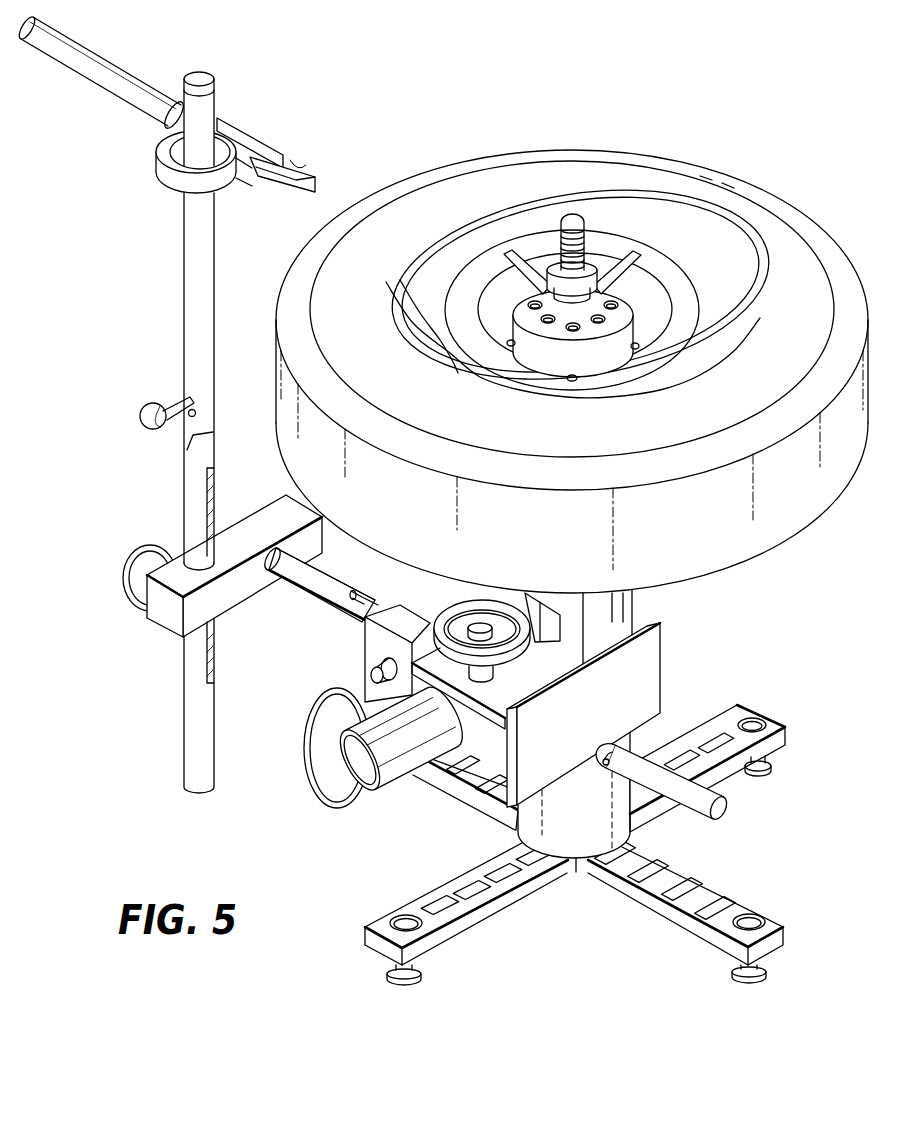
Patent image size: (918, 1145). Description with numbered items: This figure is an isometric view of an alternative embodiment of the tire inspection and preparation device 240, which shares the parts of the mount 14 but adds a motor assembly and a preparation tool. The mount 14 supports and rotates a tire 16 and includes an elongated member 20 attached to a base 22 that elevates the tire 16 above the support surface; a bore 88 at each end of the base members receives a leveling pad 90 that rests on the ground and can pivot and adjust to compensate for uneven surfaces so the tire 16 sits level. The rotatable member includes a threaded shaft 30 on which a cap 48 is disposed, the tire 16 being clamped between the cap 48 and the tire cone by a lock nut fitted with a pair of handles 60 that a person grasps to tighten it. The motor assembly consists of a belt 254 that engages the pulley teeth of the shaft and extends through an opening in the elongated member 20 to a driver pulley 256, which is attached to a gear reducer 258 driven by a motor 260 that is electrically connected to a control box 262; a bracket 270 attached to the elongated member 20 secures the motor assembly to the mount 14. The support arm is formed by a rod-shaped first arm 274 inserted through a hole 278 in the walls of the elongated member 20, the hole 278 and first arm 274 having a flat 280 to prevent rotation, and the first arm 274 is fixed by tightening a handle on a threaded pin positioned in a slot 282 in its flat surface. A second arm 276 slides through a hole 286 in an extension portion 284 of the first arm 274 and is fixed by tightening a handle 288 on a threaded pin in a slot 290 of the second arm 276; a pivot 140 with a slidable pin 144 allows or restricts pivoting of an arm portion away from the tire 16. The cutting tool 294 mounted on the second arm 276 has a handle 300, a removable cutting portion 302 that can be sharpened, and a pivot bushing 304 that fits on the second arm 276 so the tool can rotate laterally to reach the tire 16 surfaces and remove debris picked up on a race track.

The mount 14 is at (635, 612).
The tire 16 is at (776, 212).
The elongated member 20 is at (582, 842).
The base 22 is at (767, 912).
The threaded shaft 30 is at (600, 232).
The cap 48 is at (693, 370).
The handles 60 is at (628, 333).
The bore 88 is at (754, 718).
The leveling pad 90 is at (766, 772).
The pivot 140 is at (192, 420).
The slidable pin 144 is at (139, 415).
The tire inspection and preparation device 240 is at (436, 95).
The belt 254 is at (533, 643).
The driver pulley 256 is at (441, 614).
The gear reducer 258 is at (497, 757).
The motor 260 is at (367, 777).
The control box 262 is at (365, 654).
The bracket 270 is at (657, 663).
The first arm 274 is at (310, 584).
The second arm 276 is at (188, 305).
The hole 278 is at (613, 766).
The flat 280 is at (728, 806).
The slot 282 is at (361, 594).
The extension portion 284 is at (263, 520).
The hole 286 is at (150, 583).
The handle 288 is at (157, 550).
The slot 290 is at (222, 660).
The cutting tool 294 is at (127, 112).
The handle 300 is at (113, 63).
The cutting portion 302 is at (302, 174).
The pivot bushing 304 is at (220, 150).